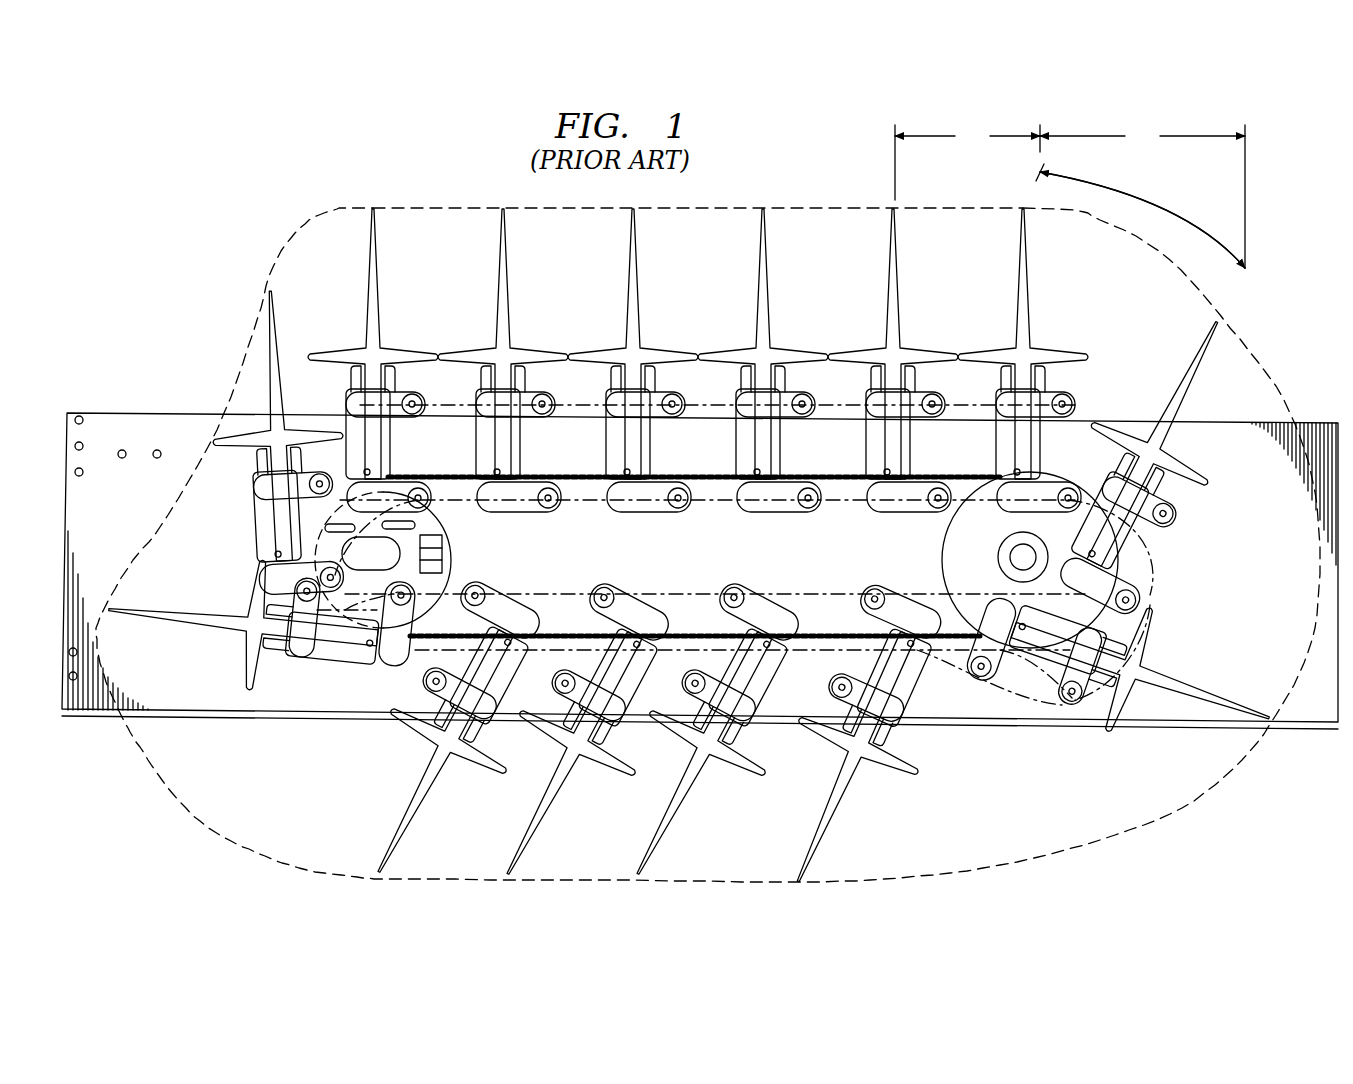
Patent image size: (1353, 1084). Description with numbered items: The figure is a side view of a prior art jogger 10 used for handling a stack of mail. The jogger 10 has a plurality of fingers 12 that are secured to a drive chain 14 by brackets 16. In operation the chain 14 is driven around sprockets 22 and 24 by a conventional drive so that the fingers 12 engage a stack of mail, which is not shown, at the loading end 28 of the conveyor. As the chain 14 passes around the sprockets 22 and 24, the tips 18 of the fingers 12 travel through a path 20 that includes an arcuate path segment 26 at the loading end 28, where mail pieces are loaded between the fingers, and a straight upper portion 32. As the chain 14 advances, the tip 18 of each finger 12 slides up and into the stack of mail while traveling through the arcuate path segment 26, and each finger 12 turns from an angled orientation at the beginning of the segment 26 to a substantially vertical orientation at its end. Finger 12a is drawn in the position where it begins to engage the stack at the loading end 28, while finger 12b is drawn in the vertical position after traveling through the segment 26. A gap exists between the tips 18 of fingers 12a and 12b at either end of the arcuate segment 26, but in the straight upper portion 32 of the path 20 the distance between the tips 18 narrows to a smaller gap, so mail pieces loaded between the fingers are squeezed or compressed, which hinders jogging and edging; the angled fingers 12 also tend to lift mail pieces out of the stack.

The jogger 10 is at (216, 216).
The fingers 12 is at (696, 545).
The finger 12a is at (1190, 375).
The finger 12b is at (1028, 300).
The drive chain 14 is at (685, 475).
The brackets 16 is at (528, 512).
The tips 18 is at (370, 207).
The path 20 is at (245, 352).
The sprocket 22 is at (945, 558).
The sprocket 24 is at (447, 515).
The arcuate path segment 26 is at (1152, 212).
The loading end 28 is at (1282, 275).
The straight upper portion 32 is at (730, 196).